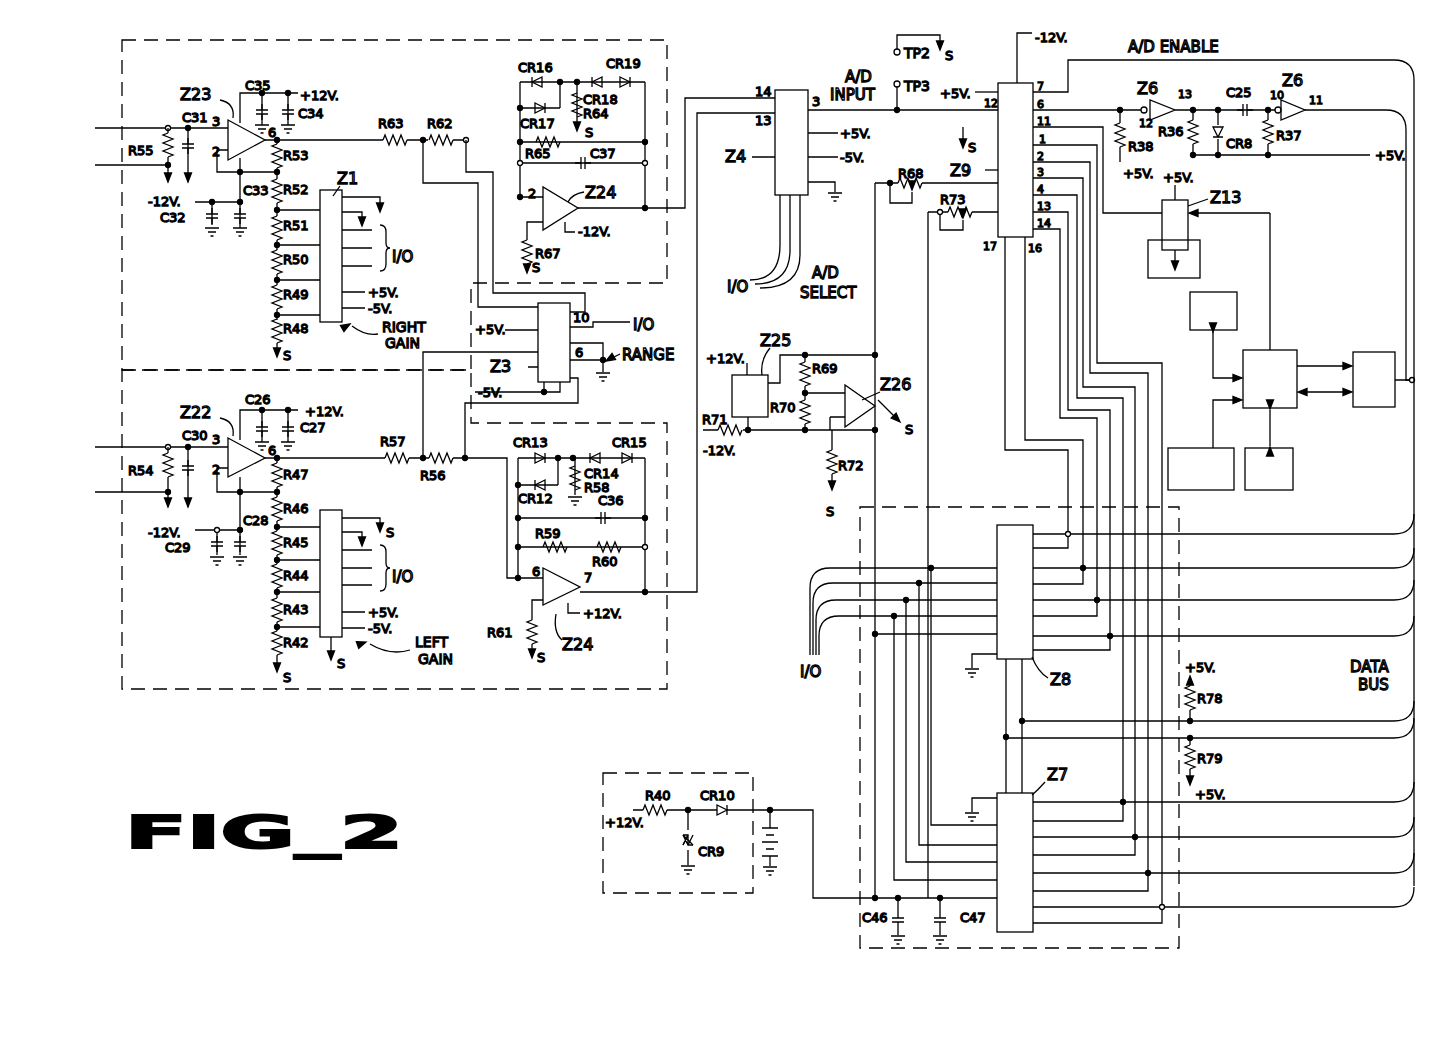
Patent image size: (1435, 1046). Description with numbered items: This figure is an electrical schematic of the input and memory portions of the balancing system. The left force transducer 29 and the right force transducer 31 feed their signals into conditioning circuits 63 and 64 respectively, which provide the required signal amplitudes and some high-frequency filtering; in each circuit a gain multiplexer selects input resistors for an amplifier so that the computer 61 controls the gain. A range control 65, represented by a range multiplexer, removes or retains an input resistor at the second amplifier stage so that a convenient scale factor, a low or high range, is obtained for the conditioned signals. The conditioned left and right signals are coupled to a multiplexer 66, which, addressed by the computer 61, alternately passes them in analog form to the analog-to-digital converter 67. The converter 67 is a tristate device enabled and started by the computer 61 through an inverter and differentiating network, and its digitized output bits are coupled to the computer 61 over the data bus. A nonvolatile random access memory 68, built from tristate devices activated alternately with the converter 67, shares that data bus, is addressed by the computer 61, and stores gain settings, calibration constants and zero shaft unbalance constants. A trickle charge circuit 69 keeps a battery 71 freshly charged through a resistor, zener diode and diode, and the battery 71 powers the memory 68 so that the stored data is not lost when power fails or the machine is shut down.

The left force transducer 29 is at (143, 490).
The right force transducer 31 is at (143, 145).
The computer 61 is at (1296, 340).
The conditioning circuit 63 is at (667, 678).
The conditioning circuit 64 is at (667, 43).
The range control 65 is at (610, 377).
The multiplexer 66 is at (792, 90).
The analog-to-digital converter 67 is at (1000, 83).
The nonvolatile random access memory 68 is at (1180, 517).
The trickle charge circuit 69 is at (603, 778).
The battery 71 is at (782, 822).